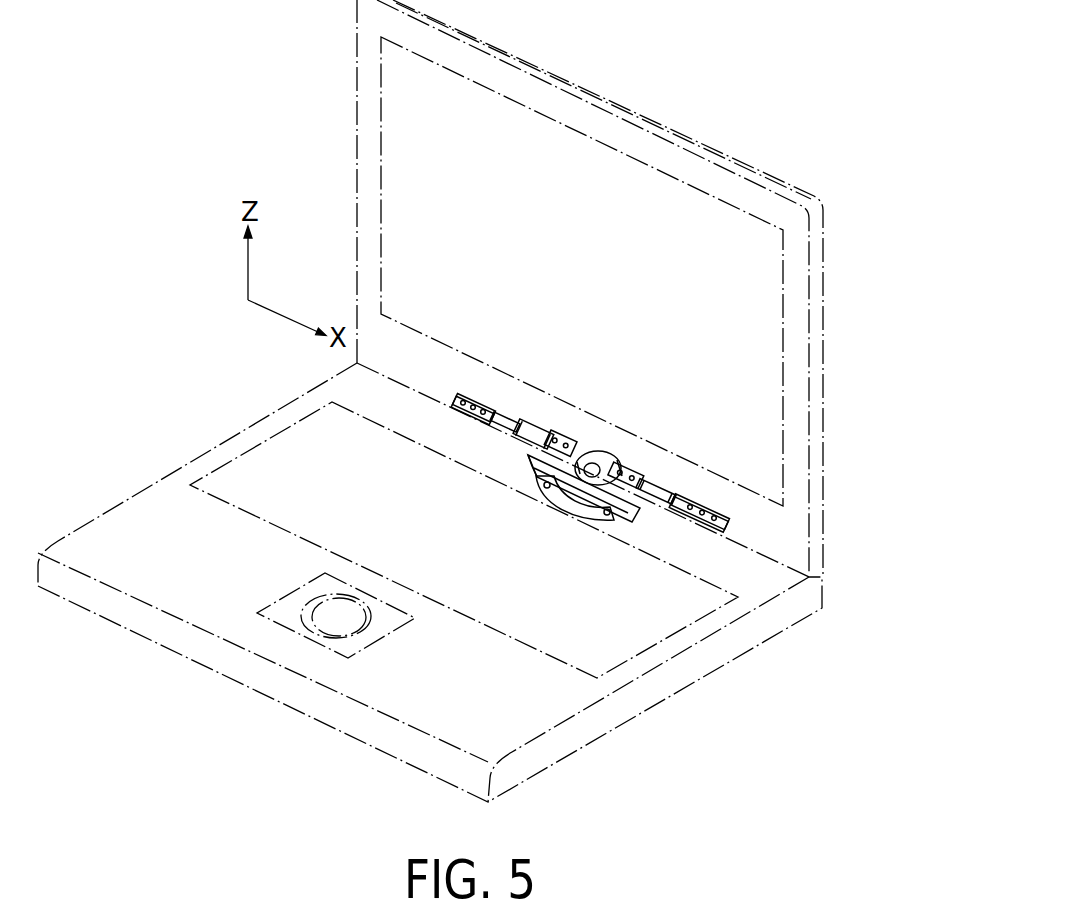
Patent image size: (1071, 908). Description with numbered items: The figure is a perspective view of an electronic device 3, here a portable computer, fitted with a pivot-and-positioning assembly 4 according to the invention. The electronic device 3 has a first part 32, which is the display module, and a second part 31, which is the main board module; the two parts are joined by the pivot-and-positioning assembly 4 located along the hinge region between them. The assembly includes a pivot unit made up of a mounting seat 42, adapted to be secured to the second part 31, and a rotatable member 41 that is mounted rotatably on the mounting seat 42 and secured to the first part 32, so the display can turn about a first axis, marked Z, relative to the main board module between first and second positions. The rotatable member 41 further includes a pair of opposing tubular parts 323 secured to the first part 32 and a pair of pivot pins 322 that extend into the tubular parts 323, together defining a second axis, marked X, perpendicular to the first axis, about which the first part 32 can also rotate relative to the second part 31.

The electronic device 3 is at (461, 401).
The second part 31 is at (636, 702).
The first part 32 is at (818, 396).
The pivot pins 322 is at (645, 477).
The tubular parts 323 is at (678, 492).
The pivot-and-positioning assembly 4 is at (592, 430).
The rotatable member 41 is at (590, 452).
The mounting seat 42 is at (541, 480).